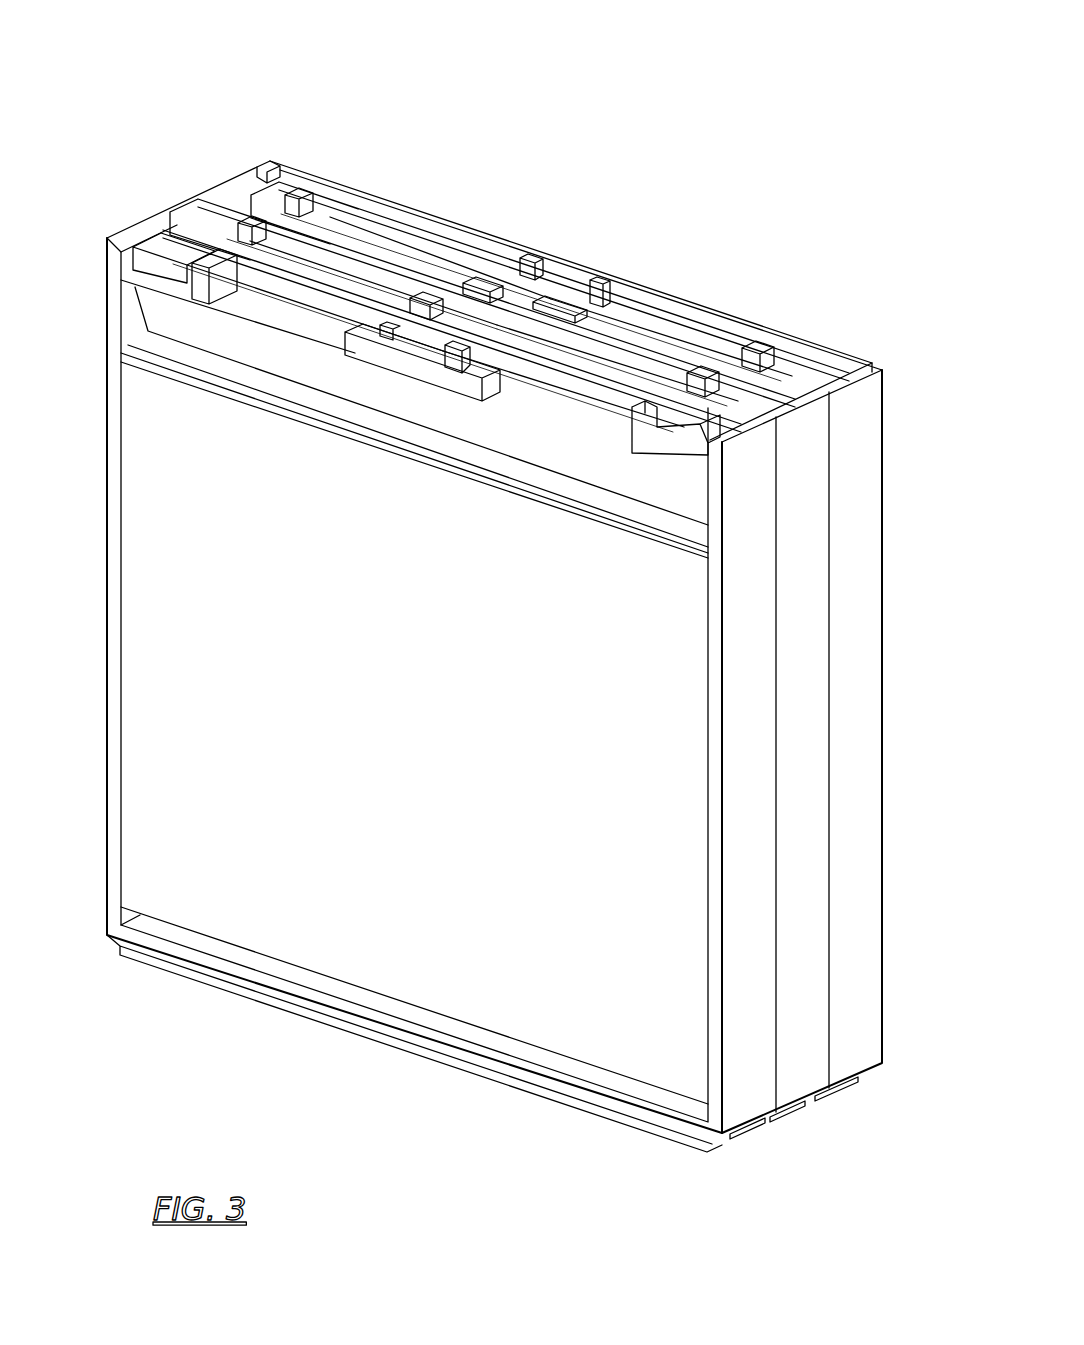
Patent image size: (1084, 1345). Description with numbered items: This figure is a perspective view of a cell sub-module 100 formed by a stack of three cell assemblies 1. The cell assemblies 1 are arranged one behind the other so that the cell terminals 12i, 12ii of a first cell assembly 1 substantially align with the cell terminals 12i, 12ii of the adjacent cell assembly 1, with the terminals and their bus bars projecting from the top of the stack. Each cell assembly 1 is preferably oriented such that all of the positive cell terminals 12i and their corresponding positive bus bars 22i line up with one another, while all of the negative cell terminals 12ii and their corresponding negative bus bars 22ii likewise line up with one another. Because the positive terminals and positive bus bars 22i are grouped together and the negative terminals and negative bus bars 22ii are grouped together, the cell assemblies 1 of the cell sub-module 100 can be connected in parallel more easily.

The cell sub-module 100 is at (128, 97).
The cell assembly 1 is at (762, 1192).
The positive cell terminal 12i is at (404, 238).
The negative cell terminal 12ii is at (695, 330).
The positive bus bar 22i is at (290, 207).
The negative bus bar 22ii is at (808, 375).